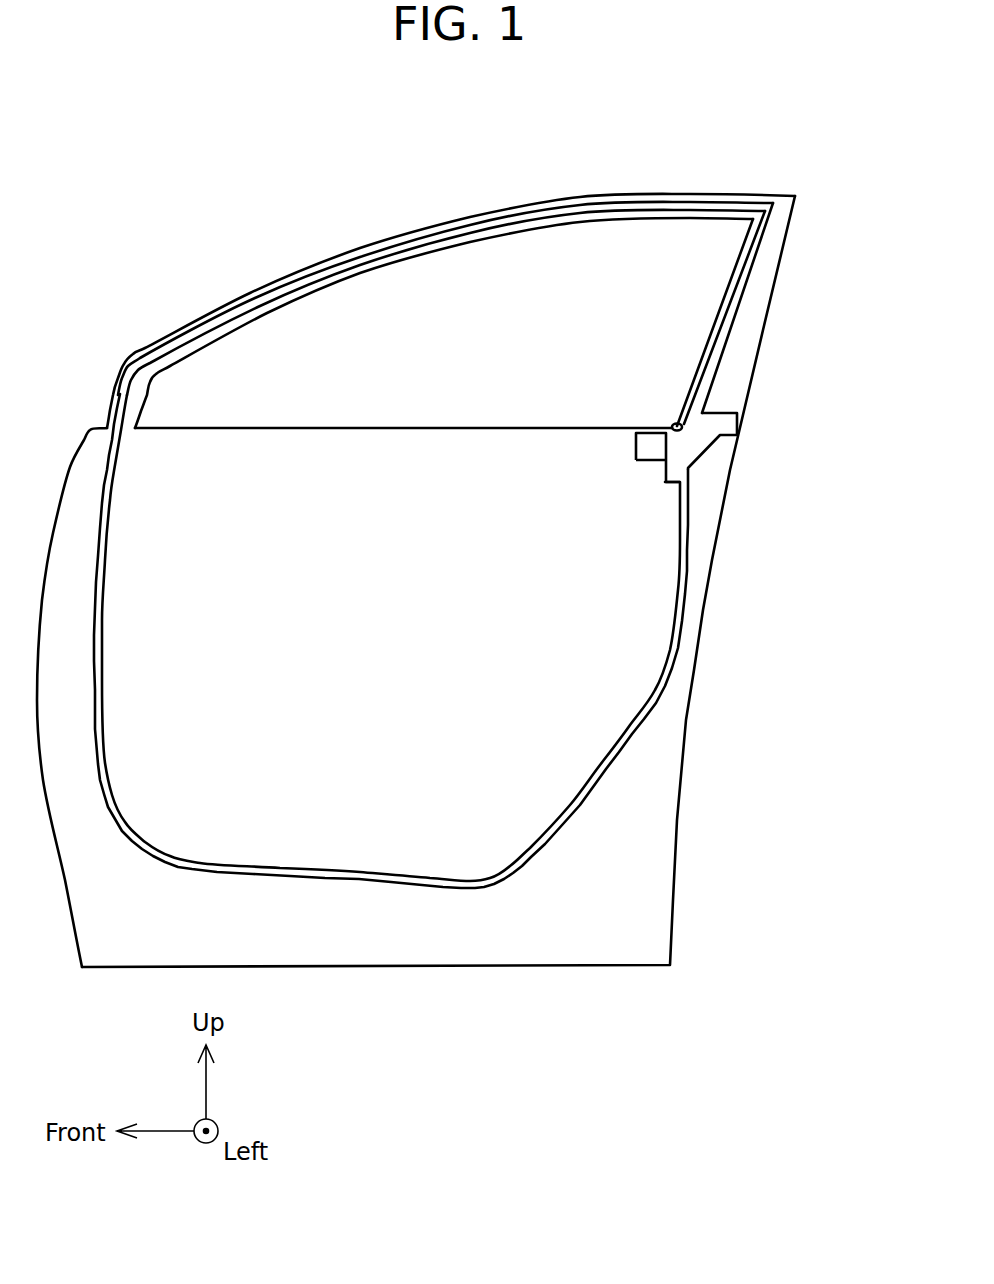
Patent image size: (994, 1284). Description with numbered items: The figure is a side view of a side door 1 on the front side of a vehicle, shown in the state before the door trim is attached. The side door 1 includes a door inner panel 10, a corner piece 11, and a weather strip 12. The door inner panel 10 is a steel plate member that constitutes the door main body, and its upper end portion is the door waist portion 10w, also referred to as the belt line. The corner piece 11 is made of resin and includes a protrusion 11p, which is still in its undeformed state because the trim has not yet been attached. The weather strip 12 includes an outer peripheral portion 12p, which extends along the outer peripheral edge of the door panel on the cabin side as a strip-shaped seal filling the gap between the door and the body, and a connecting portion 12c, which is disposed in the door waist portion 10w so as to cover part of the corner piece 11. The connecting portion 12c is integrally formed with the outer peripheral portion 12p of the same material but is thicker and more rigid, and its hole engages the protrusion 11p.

The side door 1 is at (836, 97).
The door inner panel 10 is at (577, 627).
The door waist portion 10w is at (288, 428).
The corner piece 11 is at (645, 428).
The protrusion 11p is at (712, 394).
The weather strip 12 is at (776, 474).
The connecting portion 12c is at (678, 440).
The outer peripheral portion 12p is at (682, 536).